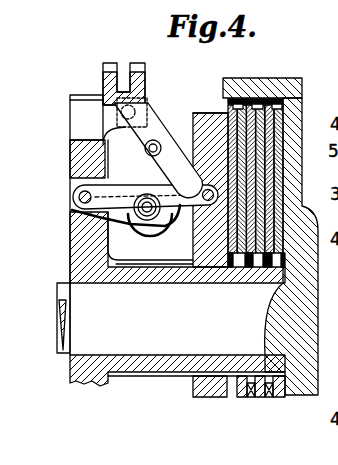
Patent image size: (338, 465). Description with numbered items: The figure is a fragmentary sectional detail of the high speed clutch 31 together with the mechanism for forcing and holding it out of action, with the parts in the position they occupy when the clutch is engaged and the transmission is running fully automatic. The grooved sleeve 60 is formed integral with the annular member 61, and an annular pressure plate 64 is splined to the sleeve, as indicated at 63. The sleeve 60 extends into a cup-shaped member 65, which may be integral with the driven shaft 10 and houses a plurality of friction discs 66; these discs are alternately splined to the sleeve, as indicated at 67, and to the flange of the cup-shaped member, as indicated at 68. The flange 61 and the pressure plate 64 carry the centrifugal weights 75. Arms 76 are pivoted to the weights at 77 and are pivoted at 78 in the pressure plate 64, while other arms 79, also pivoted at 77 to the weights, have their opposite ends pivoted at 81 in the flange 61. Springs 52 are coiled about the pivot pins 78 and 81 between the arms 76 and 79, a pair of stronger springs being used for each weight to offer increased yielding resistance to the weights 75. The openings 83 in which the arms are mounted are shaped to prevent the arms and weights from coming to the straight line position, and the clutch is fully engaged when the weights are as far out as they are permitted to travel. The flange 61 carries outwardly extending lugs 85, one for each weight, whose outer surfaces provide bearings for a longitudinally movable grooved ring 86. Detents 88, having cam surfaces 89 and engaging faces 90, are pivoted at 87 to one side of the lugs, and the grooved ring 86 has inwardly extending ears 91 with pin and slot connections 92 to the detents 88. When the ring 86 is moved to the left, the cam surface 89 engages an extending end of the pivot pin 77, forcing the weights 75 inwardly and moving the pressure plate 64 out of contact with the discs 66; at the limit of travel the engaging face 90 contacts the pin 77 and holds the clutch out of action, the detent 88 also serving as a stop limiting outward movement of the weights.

The driven shaft 10 is at (148, 348).
The high speed clutch 31 is at (120, 243).
The springs 52 is at (72, 150).
The grooved sleeve 60 is at (152, 280).
The annular member 61 is at (72, 152).
The spline 63 is at (194, 398).
The annular pressure plate 64 is at (216, 284).
The cup-shaped member 65 is at (270, 78).
The friction discs 66 is at (276, 398).
The spline 67 is at (268, 382).
The spline 68 is at (246, 107).
The centrifugal weights 75 is at (156, 235).
The arms 76 is at (197, 282).
The pivot pin 77 is at (134, 212).
The pivot pin 78 is at (216, 193).
The arms 79 is at (70, 218).
The pivot pin 81 is at (79, 198).
The openings 83 is at (230, 184).
The lugs 85 is at (70, 107).
The grooved ring 86 is at (127, 62).
The pivot 87 is at (150, 108).
The detents 88 is at (193, 113).
The cam surfaces 89 is at (140, 232).
The engaging faces 90 is at (254, 297).
The ears 91 is at (116, 124).
The pin and slot connections 92 is at (156, 142).